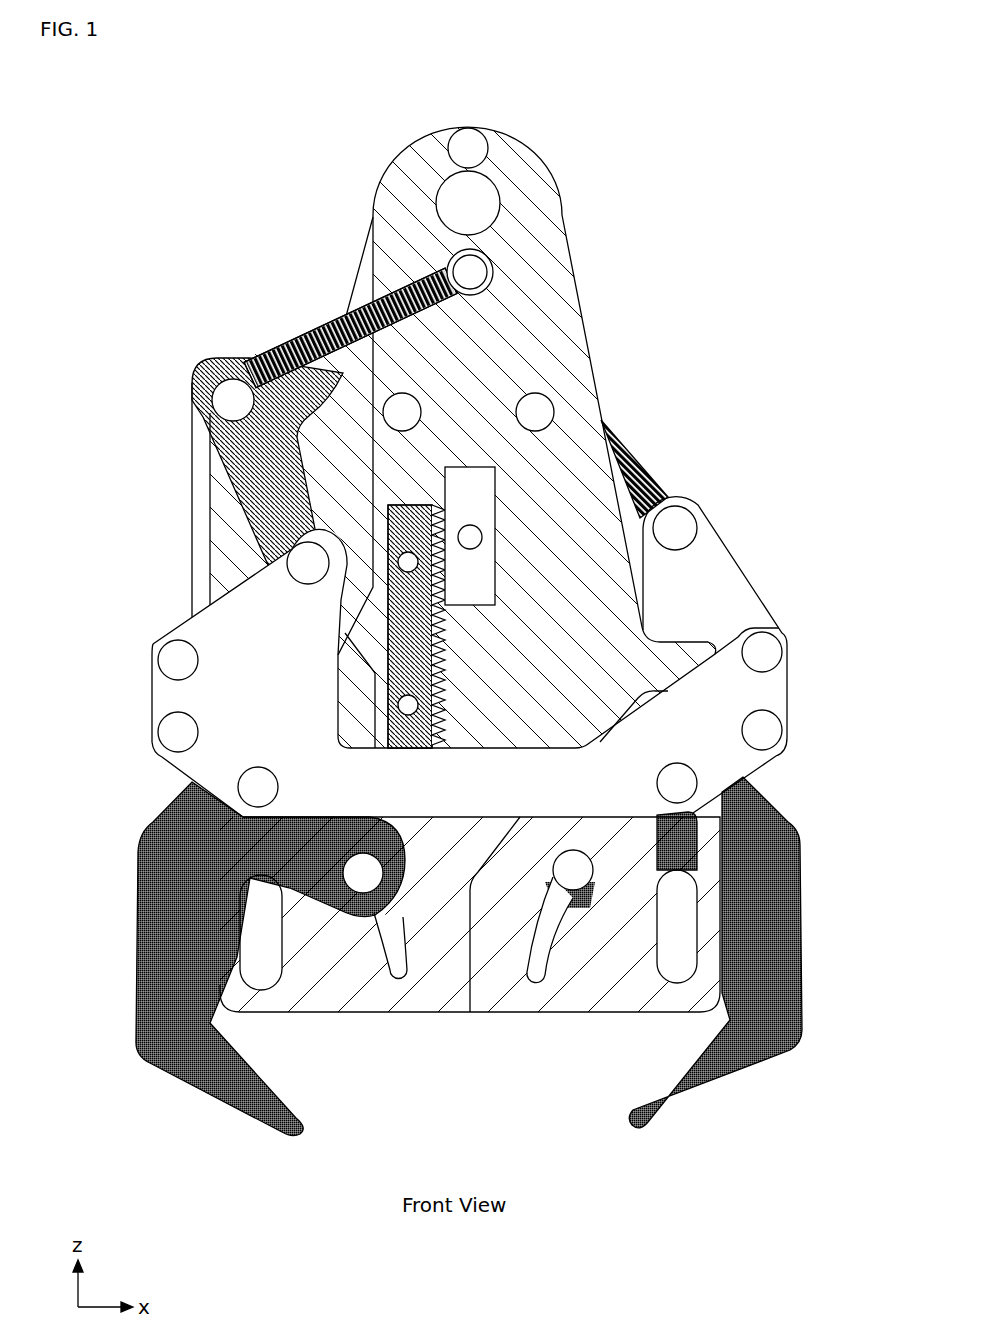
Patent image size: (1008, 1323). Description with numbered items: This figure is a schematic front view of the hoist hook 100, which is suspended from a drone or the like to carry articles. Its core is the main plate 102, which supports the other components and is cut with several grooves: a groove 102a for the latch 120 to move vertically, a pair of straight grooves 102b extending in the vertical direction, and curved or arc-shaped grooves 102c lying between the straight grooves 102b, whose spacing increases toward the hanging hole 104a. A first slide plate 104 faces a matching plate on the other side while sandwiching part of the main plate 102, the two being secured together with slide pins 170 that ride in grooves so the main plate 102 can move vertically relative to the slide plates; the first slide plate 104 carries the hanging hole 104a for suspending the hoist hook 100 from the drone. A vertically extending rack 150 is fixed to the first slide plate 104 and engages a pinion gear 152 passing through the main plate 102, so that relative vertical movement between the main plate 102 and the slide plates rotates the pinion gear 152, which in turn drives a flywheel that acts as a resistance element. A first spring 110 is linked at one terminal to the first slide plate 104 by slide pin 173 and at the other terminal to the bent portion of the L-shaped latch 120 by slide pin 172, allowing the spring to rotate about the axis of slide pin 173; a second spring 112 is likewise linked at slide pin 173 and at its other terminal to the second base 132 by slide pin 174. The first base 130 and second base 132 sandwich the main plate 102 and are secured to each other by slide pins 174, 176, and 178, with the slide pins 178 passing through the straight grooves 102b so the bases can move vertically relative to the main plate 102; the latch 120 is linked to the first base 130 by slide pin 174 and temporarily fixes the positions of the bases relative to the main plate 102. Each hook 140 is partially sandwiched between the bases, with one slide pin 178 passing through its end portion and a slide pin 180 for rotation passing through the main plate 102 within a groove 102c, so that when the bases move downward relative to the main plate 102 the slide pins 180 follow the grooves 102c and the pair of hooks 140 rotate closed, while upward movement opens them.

The hoist hook 100 is at (103, 134).
The main plate 102 is at (455, 472).
The groove 102a is at (208, 540).
The grooves 102b is at (245, 960).
The grooves 102c is at (395, 987).
The first slide plate 104 is at (520, 190).
The hanging hole 104a is at (452, 204).
The first spring 110 is at (340, 340).
The second spring 112 is at (640, 478).
The latch 120 is at (245, 500).
The first base 130 is at (790, 692).
The second base 132 is at (726, 600).
The hook 140 is at (230, 1080).
The rack 150 is at (444, 672).
The pinion gear 152 is at (495, 535).
The slide pins 170 is at (404, 414).
The slide pin 172 is at (226, 402).
The slide pin 173 is at (485, 275).
The slide pin 174 is at (298, 566).
The slide pins 176 is at (168, 664).
The slide pins 178 is at (240, 792).
The slide pin for rotation 180 is at (345, 874).